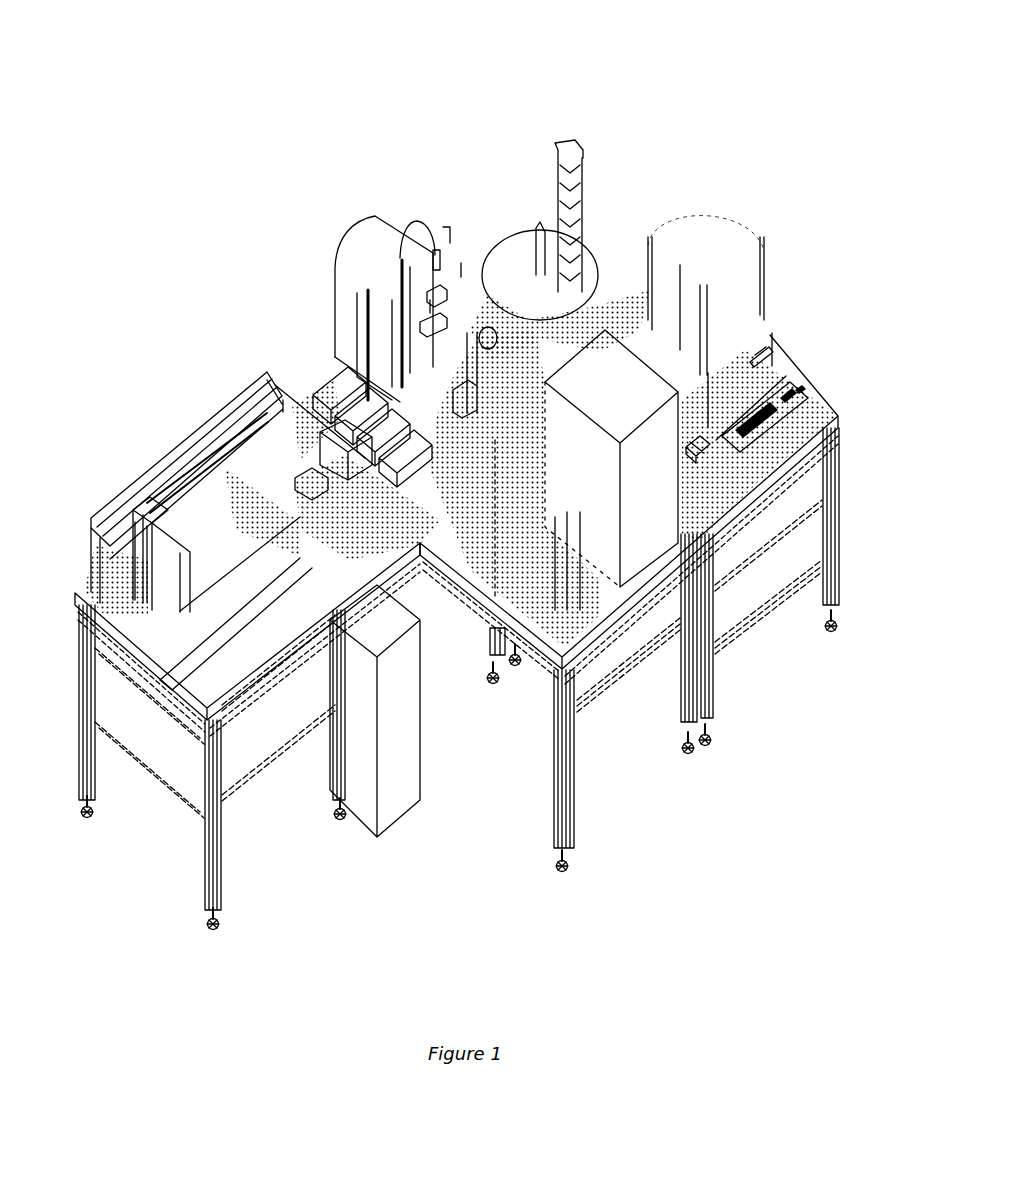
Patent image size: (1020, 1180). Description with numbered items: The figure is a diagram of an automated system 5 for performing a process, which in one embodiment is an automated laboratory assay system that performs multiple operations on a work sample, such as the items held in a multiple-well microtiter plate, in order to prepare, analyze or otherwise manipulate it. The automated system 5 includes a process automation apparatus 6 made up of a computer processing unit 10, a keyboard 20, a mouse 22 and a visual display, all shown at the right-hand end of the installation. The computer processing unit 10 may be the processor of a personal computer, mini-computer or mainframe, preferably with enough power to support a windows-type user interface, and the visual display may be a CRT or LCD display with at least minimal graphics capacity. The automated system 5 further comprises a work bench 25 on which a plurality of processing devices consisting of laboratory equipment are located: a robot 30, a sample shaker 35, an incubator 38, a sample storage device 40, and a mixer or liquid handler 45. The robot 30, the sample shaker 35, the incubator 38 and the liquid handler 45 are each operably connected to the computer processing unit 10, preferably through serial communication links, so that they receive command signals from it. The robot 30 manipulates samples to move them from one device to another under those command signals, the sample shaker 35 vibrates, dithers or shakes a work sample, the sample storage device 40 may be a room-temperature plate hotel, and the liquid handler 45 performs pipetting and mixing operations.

The automated system 5 is at (360, 99).
The process automation apparatus 6 is at (735, 111).
The computer processing unit 10 is at (778, 332).
The keyboard 20 is at (803, 391).
The mouse 22 is at (713, 473).
The work bench 25 is at (80, 576).
The robot 30 is at (485, 286).
The sample shaker 35 is at (328, 371).
The incubator 38 is at (410, 438).
The sample storage device 40 is at (588, 140).
The liquid handler 45 is at (172, 414).